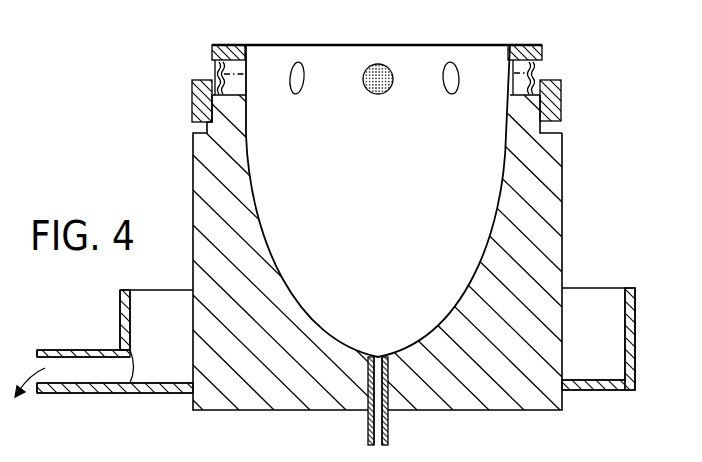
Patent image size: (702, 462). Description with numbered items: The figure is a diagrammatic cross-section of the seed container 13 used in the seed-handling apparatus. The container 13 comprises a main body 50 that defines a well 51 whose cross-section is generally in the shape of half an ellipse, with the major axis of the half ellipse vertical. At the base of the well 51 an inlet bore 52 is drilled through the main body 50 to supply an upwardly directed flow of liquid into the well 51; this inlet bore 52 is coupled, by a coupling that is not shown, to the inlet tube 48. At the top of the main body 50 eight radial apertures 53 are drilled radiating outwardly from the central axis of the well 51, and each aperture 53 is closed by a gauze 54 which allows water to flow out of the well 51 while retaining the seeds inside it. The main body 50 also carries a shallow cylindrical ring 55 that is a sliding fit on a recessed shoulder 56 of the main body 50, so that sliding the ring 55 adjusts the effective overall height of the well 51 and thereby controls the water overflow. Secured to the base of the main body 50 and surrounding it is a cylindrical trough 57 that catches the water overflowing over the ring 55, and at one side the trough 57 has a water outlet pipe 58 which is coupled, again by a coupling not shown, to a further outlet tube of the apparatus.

The seed container 13 is at (574, 166).
The inlet tube 48 is at (390, 427).
The main body 50 is at (562, 212).
The well 51 is at (378, 201).
The inlet bore 52 is at (377, 390).
The radial apertures 53 is at (238, 82).
The gauze 54 is at (214, 72).
The shallow cylindrical ring 55 is at (553, 93).
The recessed shoulder 56 is at (543, 128).
The cylindrical trough 57 is at (635, 315).
The water outlet pipe 58 is at (87, 352).